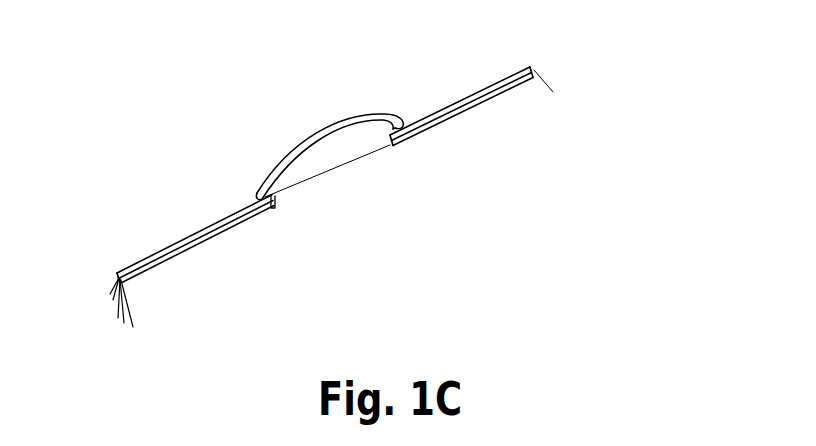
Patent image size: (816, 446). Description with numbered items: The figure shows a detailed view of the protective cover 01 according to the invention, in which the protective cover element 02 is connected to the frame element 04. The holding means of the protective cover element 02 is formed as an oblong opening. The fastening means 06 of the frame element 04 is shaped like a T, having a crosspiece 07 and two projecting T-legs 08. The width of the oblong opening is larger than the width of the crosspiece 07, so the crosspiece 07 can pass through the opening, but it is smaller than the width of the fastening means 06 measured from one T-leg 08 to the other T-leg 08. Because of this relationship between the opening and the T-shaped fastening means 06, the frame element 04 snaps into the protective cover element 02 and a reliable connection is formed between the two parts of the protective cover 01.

The protective cover 01 is at (159, 199).
The protective cover element 02 is at (475, 122).
The frame element 04 is at (125, 308).
The fastening means 06 is at (298, 128).
The crosspiece 07 is at (330, 172).
The T-legs 08 is at (263, 192).